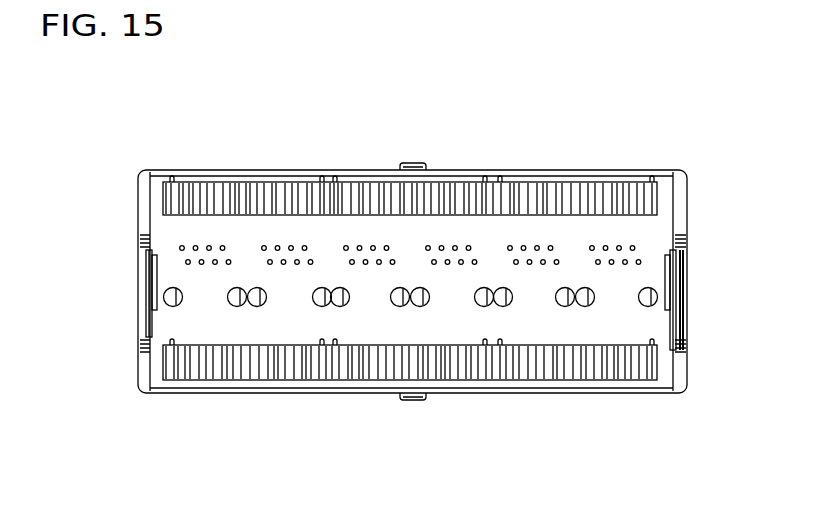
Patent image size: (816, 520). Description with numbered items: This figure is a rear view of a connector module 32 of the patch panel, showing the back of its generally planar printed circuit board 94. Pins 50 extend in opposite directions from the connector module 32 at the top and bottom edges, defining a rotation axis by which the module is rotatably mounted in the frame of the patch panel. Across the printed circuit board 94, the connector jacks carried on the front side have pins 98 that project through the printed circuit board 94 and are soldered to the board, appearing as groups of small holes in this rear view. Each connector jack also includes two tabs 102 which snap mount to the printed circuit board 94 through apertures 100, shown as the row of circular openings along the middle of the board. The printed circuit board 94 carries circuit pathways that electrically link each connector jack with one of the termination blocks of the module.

The connector module 32 is at (333, 398).
The pins 50 is at (407, 163).
The printed circuit board 94 is at (381, 330).
The pins 98 is at (208, 245).
The apertures 100 is at (228, 296).
The tabs 102 is at (165, 297).